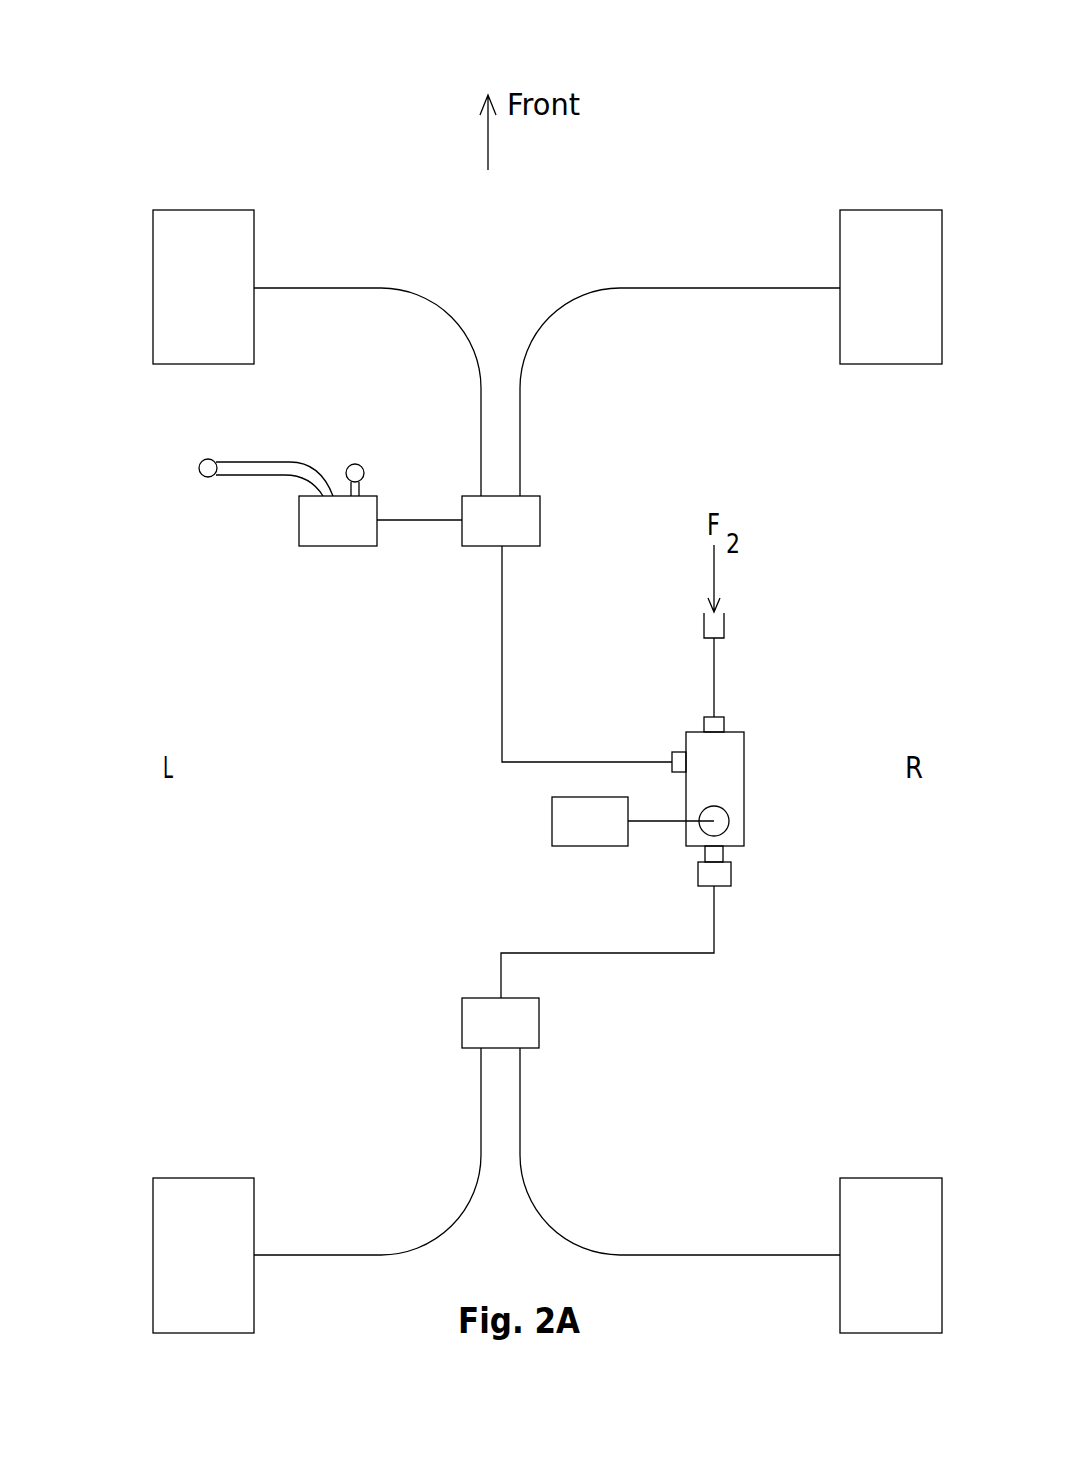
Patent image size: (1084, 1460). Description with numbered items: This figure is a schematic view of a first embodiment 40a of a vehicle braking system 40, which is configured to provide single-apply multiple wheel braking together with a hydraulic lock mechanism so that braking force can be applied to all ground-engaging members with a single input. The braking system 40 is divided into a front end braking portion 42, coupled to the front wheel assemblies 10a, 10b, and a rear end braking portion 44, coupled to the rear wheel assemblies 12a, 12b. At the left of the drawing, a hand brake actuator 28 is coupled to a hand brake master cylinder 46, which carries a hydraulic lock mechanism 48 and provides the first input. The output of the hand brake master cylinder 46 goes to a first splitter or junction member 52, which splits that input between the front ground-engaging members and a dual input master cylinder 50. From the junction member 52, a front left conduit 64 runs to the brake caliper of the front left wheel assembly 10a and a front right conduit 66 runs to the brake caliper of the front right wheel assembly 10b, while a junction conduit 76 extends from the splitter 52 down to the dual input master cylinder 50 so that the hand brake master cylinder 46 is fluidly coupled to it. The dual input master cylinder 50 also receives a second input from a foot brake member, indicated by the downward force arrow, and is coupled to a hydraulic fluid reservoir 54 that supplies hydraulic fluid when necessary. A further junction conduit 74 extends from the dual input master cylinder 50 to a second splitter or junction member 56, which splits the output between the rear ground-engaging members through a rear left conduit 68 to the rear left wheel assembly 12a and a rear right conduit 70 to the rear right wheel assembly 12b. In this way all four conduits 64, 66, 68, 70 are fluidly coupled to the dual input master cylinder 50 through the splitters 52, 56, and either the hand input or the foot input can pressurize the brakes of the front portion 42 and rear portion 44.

The front wheel assemblies 10a is at (204, 203).
The right front wheel brake 10b is at (888, 203).
The rear wheel assemblies 12a is at (204, 1171).
The right rear wheel brake 12b is at (886, 1171).
The hand brake actuator 28 is at (262, 483).
The braking system 40 is at (385, 128).
The first embodiment of braking system 40a is at (160, 697).
The front end braking portion 42 is at (613, 235).
The rear end braking portion 44 is at (377, 1264).
The hand brake master cylinder 46 is at (338, 546).
The hydraulic lock mechanism 48 is at (352, 462).
The dual input master cylinder 50 is at (762, 819).
The first splitter or junction member 52 is at (540, 520).
The hydraulic fluid reservoir 54 is at (552, 821).
The second splitter or junction member 56 is at (462, 1020).
The front left conduit 64 is at (313, 288).
The front right conduit 66 is at (685, 288).
The rear left conduit 68 is at (352, 1255).
The rear right conduit 70 is at (676, 1255).
The junction conduit 74 is at (607, 953).
The junction conduit 76 is at (503, 655).